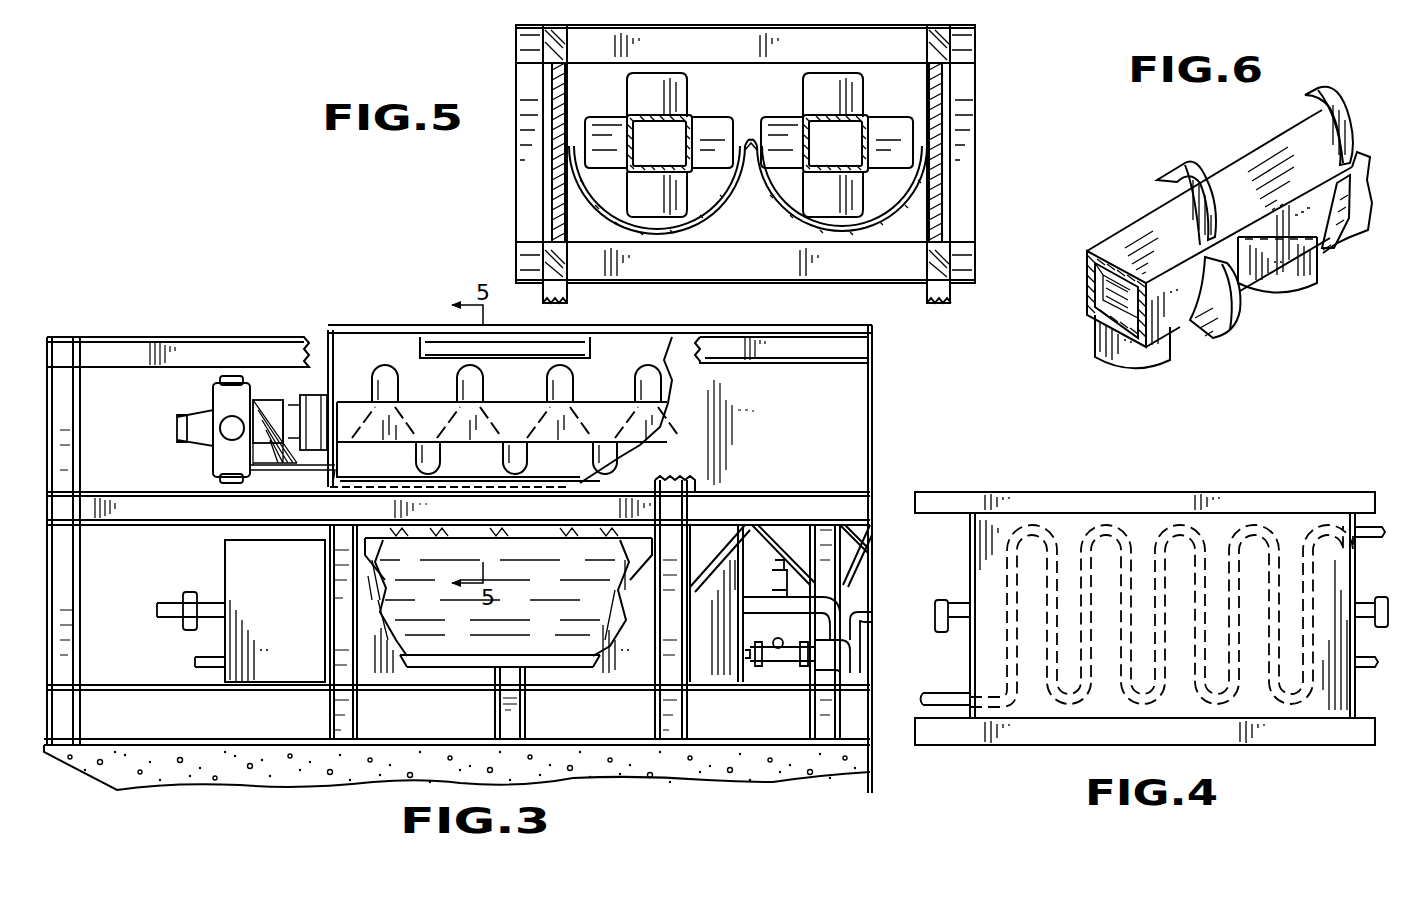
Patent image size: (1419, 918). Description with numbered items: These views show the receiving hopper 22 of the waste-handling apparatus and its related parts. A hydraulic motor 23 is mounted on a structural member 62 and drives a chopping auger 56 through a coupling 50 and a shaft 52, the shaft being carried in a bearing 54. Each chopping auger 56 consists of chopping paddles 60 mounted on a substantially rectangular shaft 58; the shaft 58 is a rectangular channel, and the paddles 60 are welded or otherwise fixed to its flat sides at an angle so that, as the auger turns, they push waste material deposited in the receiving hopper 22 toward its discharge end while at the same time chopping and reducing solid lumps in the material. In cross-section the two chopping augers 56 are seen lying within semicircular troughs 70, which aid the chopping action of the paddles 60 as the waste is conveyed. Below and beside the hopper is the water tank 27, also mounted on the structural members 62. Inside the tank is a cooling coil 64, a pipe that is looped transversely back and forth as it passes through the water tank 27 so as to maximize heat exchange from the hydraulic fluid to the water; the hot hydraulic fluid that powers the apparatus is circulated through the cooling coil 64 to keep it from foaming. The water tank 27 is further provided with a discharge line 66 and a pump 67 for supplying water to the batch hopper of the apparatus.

In FIG. 5, the receiving hopper 22 is at (945, 112).
In FIG. 3, the hydraulic motor 23 is at (177, 428).
In FIG. 3, the water tank 27 is at (717, 682).
In FIG. 4, the water tank 27 is at (1356, 702).
In FIG. 3, the coupling 50 is at (278, 398).
In FIG. 3, the shaft 52 is at (303, 402).
In FIG. 3, the bearing 54 is at (326, 400).
In FIG. 3, the chopping auger 56 is at (420, 388).
In FIG. 5, the chopping auger 56 is at (697, 112).
In FIG. 6, the chopping auger 56 is at (1122, 217).
In FIG. 3, the shaft 58 is at (603, 402).
In FIG. 5, the shaft 58 is at (706, 178).
In FIG. 6, the shaft 58 is at (1247, 163).
In FIG. 3, the chopping paddles 60 is at (547, 386).
In FIG. 5, the chopping paddles 60 is at (600, 118).
In FIG. 6, the chopping paddles 60 is at (1260, 290).
In FIG. 3, the structural member 62 is at (327, 718).
In FIG. 4, the structural member 62 is at (1028, 745).
In FIG. 3, the cooling coil 64 is at (456, 668).
In FIG. 4, the cooling coil 64 is at (1293, 700).
In FIG. 3, the discharge line 66 is at (766, 660).
In FIG. 3, the pump 67 is at (807, 672).
In FIG. 5, the semicircular troughs 70 is at (764, 194).